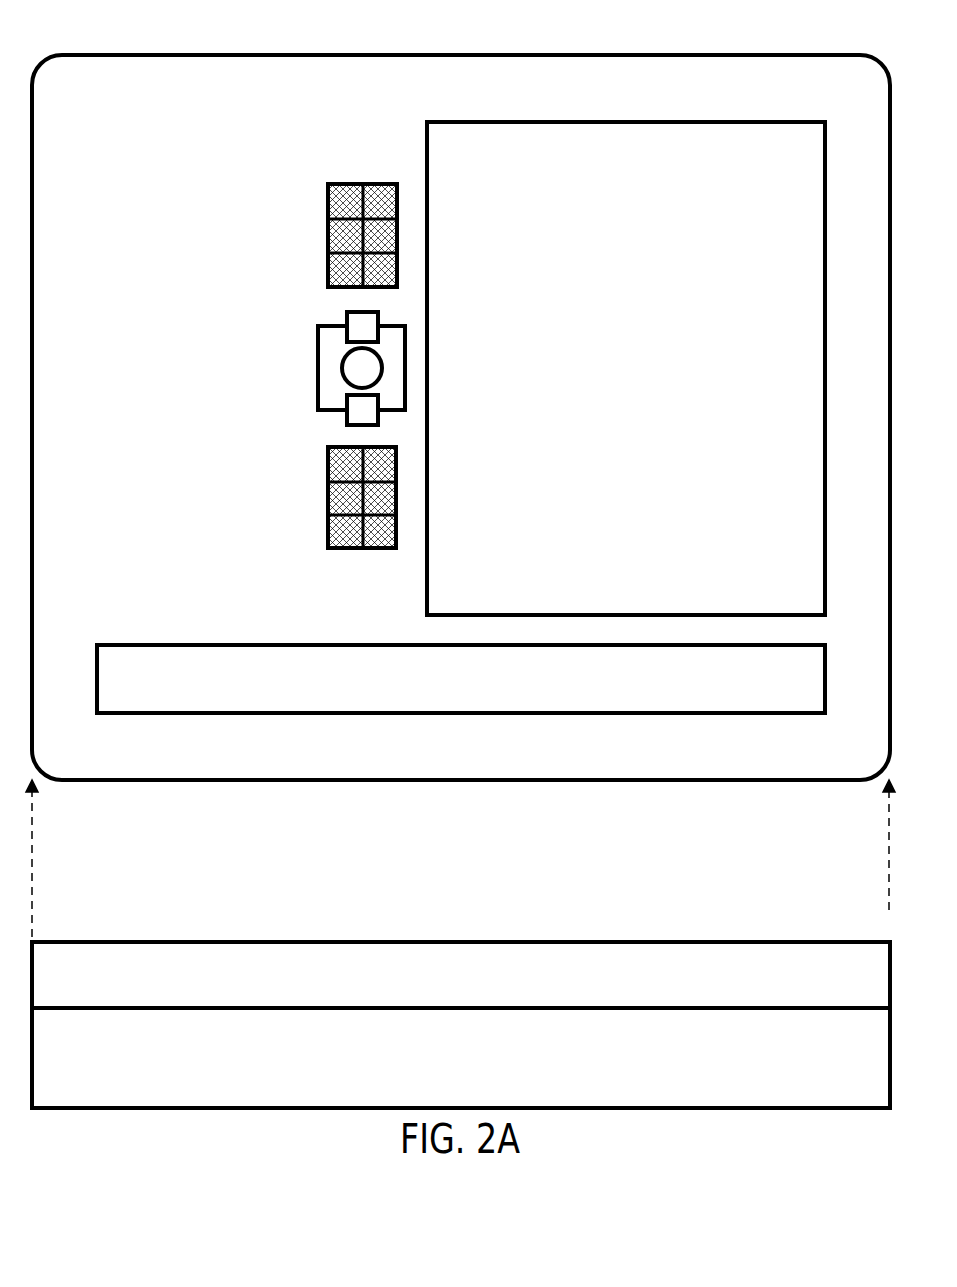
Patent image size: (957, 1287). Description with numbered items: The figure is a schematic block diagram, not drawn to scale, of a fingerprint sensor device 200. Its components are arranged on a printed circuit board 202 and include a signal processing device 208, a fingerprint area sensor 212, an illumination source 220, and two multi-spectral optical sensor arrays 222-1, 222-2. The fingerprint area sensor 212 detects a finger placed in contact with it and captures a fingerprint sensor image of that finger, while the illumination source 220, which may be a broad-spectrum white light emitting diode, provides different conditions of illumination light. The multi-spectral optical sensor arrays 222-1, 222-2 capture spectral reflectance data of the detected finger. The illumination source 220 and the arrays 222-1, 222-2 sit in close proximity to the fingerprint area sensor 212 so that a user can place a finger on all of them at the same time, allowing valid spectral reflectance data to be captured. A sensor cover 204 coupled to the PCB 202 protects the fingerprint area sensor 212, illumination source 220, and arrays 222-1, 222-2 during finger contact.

The fingerprint sensor device 200 is at (461, 397).
The printed circuit board 202 is at (461, 590).
The sensor cover 204 is at (461, 981).
The signal processing device 208 is at (461, 679).
The fingerprint area sensor 212 is at (626, 368).
The illumination source 220 is at (318, 372).
The multi-spectral optical sensor array 222-1 is at (328, 237).
The multi-spectral optical sensor array 222-2 is at (328, 499).